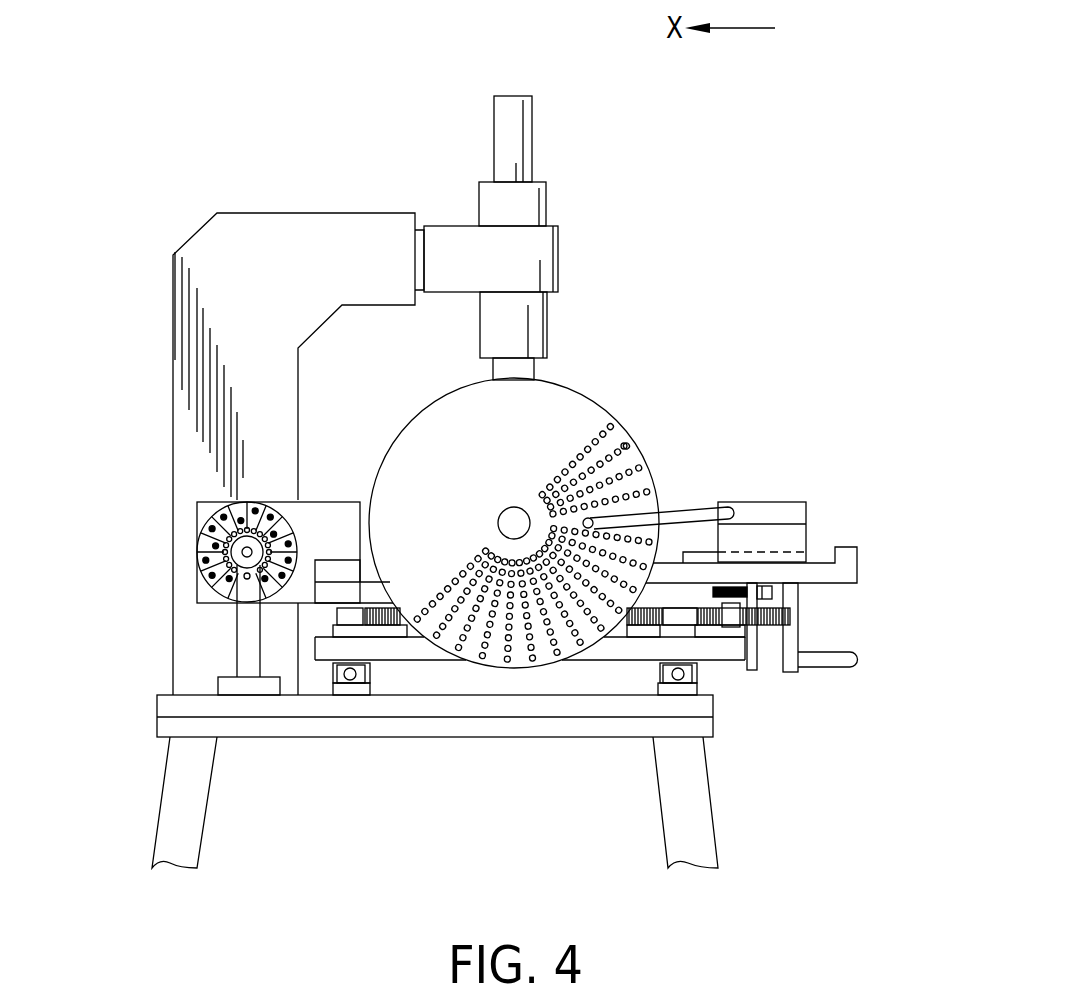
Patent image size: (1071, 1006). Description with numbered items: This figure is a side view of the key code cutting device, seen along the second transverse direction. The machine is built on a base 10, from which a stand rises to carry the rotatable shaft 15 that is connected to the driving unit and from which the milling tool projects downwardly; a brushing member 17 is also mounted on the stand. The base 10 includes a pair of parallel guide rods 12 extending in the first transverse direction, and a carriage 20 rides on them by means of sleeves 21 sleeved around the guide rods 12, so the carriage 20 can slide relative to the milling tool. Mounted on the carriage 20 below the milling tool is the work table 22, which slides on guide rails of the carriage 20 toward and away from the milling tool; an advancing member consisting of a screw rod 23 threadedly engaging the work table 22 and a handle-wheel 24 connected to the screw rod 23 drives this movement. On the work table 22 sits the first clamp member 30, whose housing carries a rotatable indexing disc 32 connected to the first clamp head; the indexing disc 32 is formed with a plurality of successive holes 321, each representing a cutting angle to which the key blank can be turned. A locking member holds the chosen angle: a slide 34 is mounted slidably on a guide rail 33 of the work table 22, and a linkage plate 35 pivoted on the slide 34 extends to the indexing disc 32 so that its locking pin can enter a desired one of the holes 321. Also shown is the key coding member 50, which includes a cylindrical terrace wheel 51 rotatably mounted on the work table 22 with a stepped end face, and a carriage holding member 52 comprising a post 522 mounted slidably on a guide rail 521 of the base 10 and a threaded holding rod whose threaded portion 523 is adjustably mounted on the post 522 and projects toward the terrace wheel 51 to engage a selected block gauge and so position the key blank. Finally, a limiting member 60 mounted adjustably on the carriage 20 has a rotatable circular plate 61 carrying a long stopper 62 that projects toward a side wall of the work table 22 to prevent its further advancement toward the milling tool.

The base 10 is at (150, 715).
The guide rods 12 is at (350, 680).
The rotatable shaft 15 is at (530, 327).
The brushing member 17 is at (545, 143).
The carriage 20 is at (582, 669).
The sleeves 21 is at (660, 673).
The work table 22 is at (652, 595).
The screw rod 23 is at (390, 625).
The handle-wheel 24 is at (793, 640).
The first clamp member 30 is at (551, 505).
The indexing disc 32 is at (590, 390).
The holes 321 is at (624, 446).
The guide rail 33 is at (820, 555).
The slide 34 is at (796, 515).
The linkage plate 35 is at (690, 510).
The key coding member 50 is at (240, 494).
The terrace wheel 51 is at (217, 513).
The carriage holding member 52 is at (183, 627).
The guide rail 521 is at (183, 684).
The post 522 is at (245, 617).
The threaded portion 523 is at (246, 578).
The limiting member 60 is at (791, 602).
The circular plate 61 is at (750, 672).
The long stopper 62 is at (733, 583).